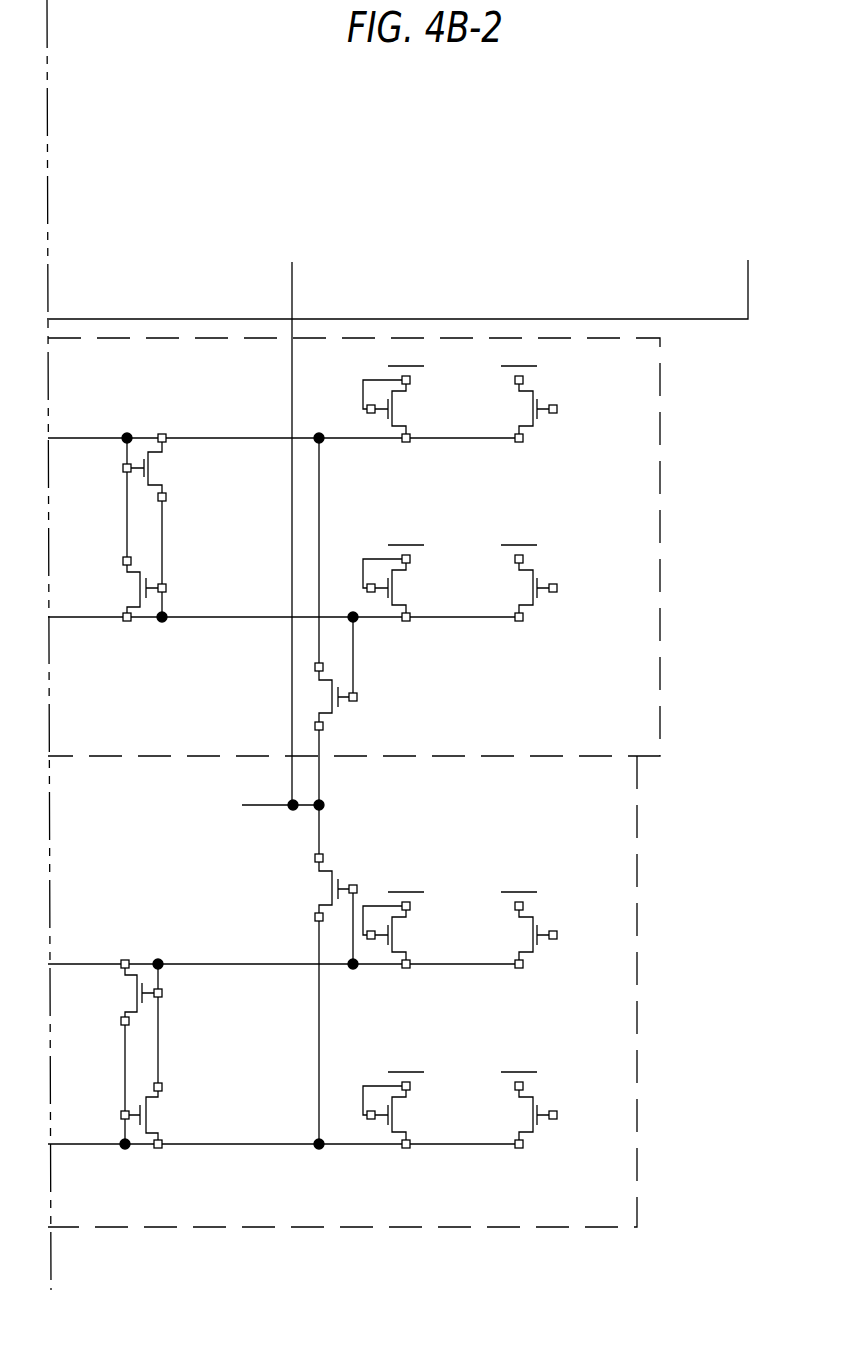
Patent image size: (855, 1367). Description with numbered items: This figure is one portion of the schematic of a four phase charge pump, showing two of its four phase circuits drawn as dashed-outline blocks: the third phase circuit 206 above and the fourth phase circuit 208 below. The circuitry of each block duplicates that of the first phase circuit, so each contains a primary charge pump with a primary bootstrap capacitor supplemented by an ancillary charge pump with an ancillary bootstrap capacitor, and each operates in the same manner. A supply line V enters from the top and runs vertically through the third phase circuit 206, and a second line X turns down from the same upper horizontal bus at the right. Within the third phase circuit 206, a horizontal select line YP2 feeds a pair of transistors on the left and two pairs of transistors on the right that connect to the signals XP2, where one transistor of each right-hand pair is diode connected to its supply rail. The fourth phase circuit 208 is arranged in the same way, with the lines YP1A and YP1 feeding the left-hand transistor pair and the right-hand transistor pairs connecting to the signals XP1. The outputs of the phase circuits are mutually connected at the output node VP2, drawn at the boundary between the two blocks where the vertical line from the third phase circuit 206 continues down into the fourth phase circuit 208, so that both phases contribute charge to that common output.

The third phase circuit 206 is at (660, 470).
The fourth phase circuit 208 is at (637, 922).
The supply voltage line V is at (310, 263).
The X terminal line X is at (730, 259).
The output node VP2 is at (282, 792).
The YP2 select line YP2 is at (283, 424).
The YP1A select line YP1A is at (283, 951).
The YP1 select line YP1 is at (283, 1130).
The XP2 transistor pair XP2 is at (557, 409).
The XP1 transistor pair XP1 is at (557, 935).